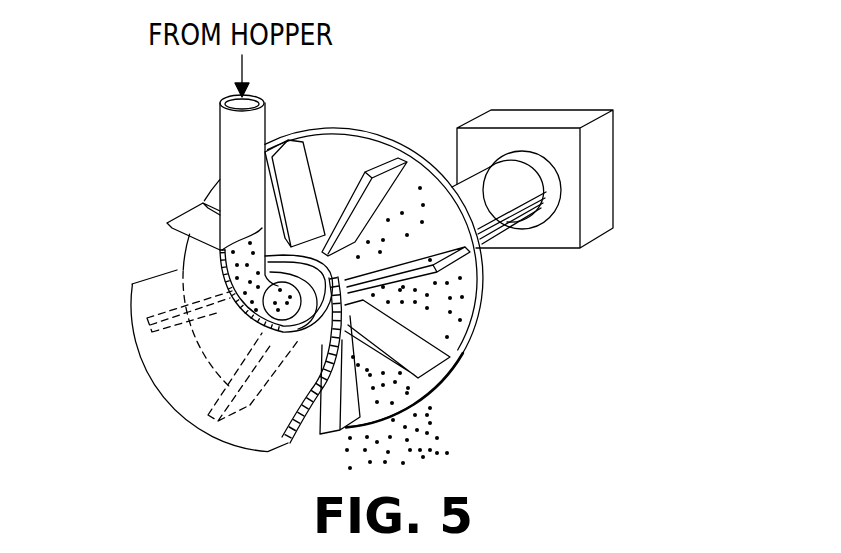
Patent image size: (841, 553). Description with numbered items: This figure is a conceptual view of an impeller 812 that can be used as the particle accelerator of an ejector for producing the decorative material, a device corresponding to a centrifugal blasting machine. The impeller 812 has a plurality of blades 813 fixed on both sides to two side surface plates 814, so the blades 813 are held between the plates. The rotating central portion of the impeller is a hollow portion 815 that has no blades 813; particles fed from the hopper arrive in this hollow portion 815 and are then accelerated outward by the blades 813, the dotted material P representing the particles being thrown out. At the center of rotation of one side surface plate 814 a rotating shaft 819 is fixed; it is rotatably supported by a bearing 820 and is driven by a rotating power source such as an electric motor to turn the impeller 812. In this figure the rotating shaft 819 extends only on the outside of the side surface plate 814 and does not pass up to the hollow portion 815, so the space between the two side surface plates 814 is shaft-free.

The impeller 812 is at (148, 396).
The blades 813 is at (426, 350).
The side surface plates 814 is at (363, 146).
The hollow portion 815 is at (292, 309).
The rotating shaft 819 is at (497, 214).
The bearing 820 is at (603, 181).
The particulate material P is at (443, 428).